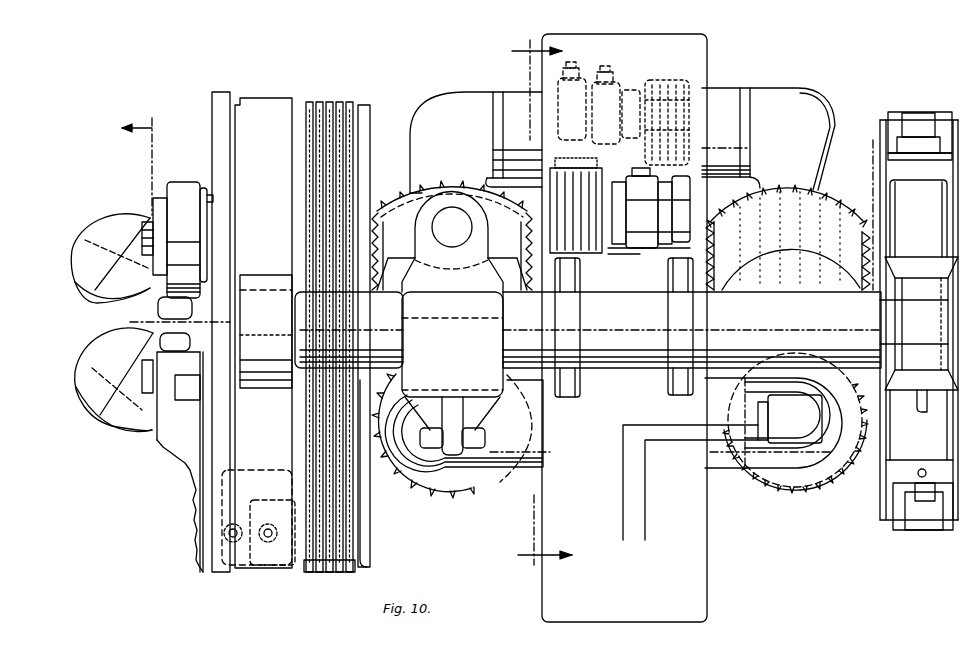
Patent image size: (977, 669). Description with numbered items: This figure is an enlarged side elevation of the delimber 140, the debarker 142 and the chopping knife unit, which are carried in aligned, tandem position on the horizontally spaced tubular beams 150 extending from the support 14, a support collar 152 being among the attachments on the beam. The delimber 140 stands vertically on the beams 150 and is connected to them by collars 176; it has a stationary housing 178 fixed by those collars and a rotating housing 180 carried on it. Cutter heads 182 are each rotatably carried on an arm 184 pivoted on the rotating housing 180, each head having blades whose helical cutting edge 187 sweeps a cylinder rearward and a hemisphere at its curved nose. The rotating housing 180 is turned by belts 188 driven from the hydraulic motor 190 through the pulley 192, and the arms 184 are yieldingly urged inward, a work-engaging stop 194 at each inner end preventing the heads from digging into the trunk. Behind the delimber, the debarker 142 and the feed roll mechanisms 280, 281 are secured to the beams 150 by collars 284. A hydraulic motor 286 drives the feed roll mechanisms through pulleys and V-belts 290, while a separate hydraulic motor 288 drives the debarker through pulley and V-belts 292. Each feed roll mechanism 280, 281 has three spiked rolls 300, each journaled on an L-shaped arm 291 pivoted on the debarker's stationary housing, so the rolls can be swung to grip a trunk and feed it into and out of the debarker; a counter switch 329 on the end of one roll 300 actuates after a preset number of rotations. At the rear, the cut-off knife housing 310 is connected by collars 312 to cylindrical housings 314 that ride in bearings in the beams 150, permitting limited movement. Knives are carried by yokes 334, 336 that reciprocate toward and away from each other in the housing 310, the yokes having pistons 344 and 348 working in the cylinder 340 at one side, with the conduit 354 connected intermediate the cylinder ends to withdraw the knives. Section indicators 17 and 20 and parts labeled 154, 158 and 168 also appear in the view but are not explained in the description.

The support 14 is at (470, 190).
The section line 17 is at (262, 322).
The control box section 20 is at (597, 328).
The delimber 140 is at (216, 90).
The debarker 142 is at (710, 76).
The tubular beams 150 is at (598, 370).
The support collar 152 is at (492, 303).
The gear housing 154 is at (455, 497).
The gear arm 158 is at (485, 470).
The gear arm 168 is at (420, 470).
The collar 176 is at (272, 276).
The stationary housing 178 is at (268, 98).
The rotating housing 180 is at (364, 105).
The cutter head 182 is at (114, 204).
The arm 184 is at (182, 182).
The cutting edge 187 is at (108, 280).
The belts 188 is at (338, 102).
The hydraulic motor 190 is at (262, 570).
The pulley 192 is at (366, 567).
The work-engaging stop 194 is at (192, 305).
The feed roll mechanism 280 is at (462, 110).
The feed roll mechanism 281 is at (845, 70).
The collar 284 is at (668, 303).
The hydraulic motor 286 is at (656, 250).
The hydraulic motor 288 is at (578, 74).
The pulleys and V-belts 290 is at (575, 182).
The L-shaped arm 291 is at (408, 140).
The pulley and V-belts 292 is at (678, 62).
The spiked roll 300 is at (378, 215).
The cut-off knife housing 310 is at (878, 140).
The collar 312 is at (922, 290).
The cylindrical housing 314 is at (890, 307).
The counter switch 329 is at (806, 432).
The yoke 334 is at (922, 118).
The yoke 336 is at (915, 530).
The cylinder 340 is at (920, 216).
The piston rod and piston 344 is at (905, 125).
The piston rod and piston 348 is at (925, 500).
The conduit 354 is at (922, 412).